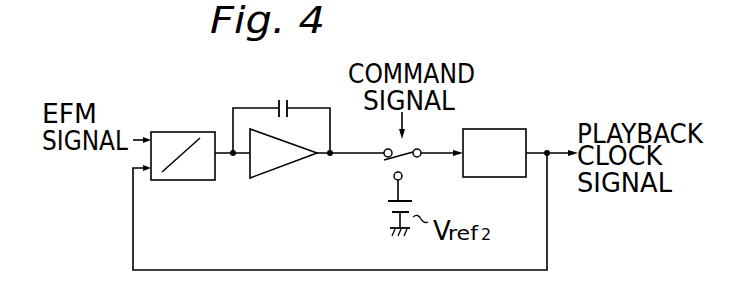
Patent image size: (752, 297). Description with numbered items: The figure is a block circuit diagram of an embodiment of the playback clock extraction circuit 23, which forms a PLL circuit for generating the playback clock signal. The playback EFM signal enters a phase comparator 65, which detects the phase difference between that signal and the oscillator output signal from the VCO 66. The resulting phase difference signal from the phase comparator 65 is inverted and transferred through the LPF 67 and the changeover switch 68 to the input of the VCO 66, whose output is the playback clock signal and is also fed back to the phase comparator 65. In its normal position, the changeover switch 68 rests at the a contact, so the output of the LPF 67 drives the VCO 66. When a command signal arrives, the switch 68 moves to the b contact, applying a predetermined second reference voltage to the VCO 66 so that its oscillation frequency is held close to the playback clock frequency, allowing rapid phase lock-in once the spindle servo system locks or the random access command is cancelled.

The playback clock extraction circuit 23 is at (531, 103).
The phase comparator 65 is at (193, 132).
The VCO (voltage controlled oscillator) 66 is at (516, 178).
The LPF 67 is at (247, 186).
The changeover switch 68 is at (385, 178).